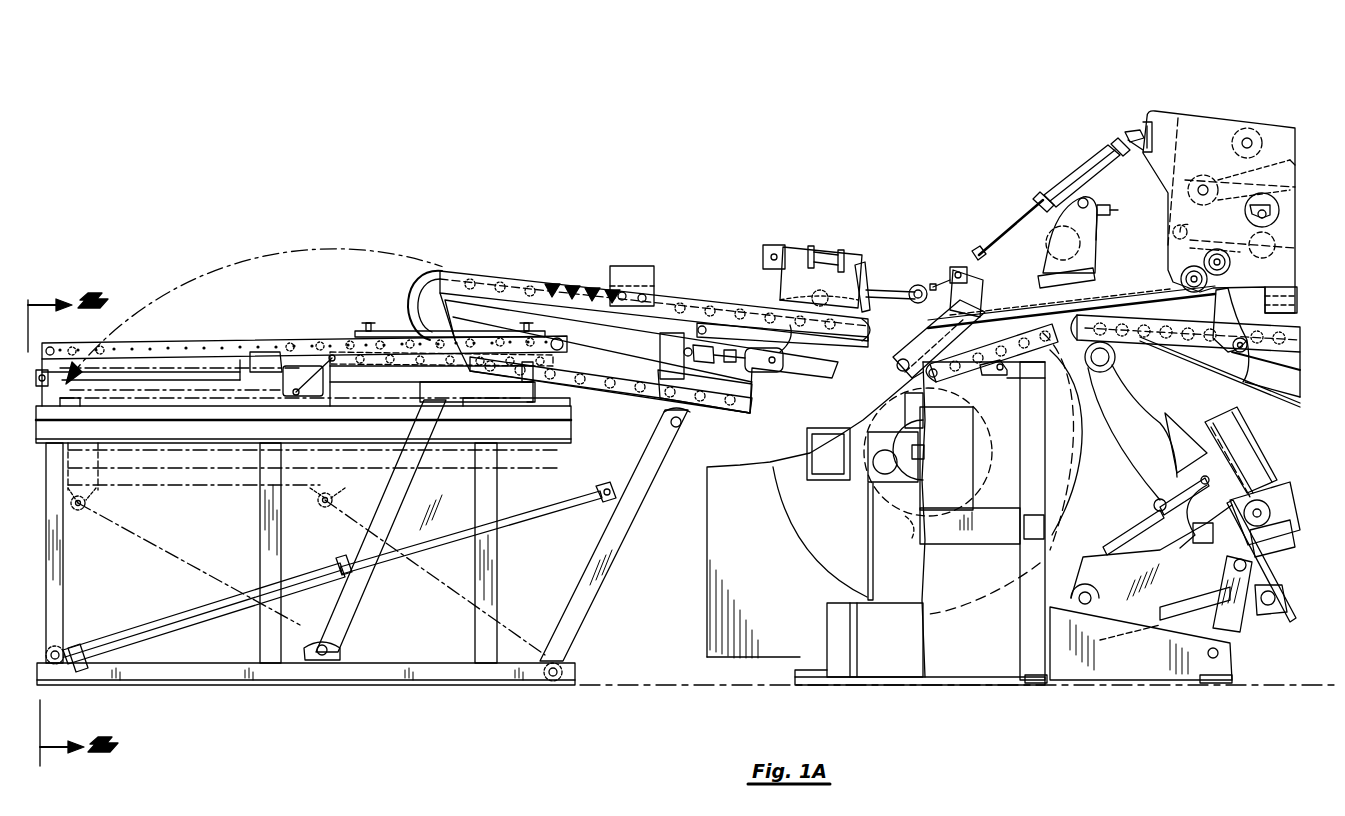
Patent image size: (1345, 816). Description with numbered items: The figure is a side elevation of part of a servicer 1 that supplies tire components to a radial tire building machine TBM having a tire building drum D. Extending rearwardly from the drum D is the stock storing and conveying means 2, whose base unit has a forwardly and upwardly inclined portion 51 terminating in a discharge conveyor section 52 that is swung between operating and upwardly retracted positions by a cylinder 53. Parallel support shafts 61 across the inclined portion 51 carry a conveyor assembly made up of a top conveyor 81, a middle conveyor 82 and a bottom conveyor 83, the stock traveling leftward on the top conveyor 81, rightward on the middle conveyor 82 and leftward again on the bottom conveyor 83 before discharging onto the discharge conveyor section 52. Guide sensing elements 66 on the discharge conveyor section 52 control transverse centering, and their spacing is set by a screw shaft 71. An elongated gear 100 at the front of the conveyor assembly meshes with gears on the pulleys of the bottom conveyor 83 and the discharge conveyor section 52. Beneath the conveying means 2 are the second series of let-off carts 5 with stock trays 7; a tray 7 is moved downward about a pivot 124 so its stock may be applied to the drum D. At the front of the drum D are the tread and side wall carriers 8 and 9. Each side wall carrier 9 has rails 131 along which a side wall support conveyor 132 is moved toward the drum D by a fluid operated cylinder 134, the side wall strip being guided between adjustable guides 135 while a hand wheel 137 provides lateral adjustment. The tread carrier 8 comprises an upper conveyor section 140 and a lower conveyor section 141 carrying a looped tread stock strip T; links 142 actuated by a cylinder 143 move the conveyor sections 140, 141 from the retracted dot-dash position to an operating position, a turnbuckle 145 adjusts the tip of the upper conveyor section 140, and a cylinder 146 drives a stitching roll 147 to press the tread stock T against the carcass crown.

The servicer 1 is at (1196, 104).
The stock storing and conveying means 2 is at (1220, 128).
The stock let-off units or carts 5 is at (1193, 352).
The stock tray 7 is at (1046, 330).
The tread carrier 8 is at (638, 318).
The side wall carrier 9 is at (226, 340).
The forwardly and upwardly inclined portion 51 is at (1160, 108).
The discharge conveyor section 52 is at (990, 290).
The cylinder 53 is at (1078, 162).
The support shafts 61 is at (1283, 212).
The guide sensing elements 66 is at (1096, 218).
The screw shaft 71 is at (1088, 203).
The top conveyor 81 is at (1276, 128).
The middle conveyor 82 is at (1238, 175).
The bottom conveyor 83 is at (1292, 238).
The elongated gear 100 is at (1232, 266).
The pivot 124 is at (1243, 380).
The rails 131 is at (470, 444).
The side wall support conveyor 132 is at (205, 343).
The fluid operated cylinder 134 is at (216, 414).
The adjustable guides 135 is at (392, 333).
The hand wheel 137 is at (330, 356).
The upper conveyor section 140 is at (516, 280).
The lower conveyor section 141 is at (585, 368).
The links 142 is at (388, 512).
The cylinder 143 is at (153, 620).
The turnbuckle 145 is at (770, 362).
The cylinder 146 is at (828, 250).
The stitching roll 147 is at (918, 286).
The tread stock strip T is at (476, 272).
The tire building drum D is at (912, 538).
The tire building machine TBM is at (1135, 688).